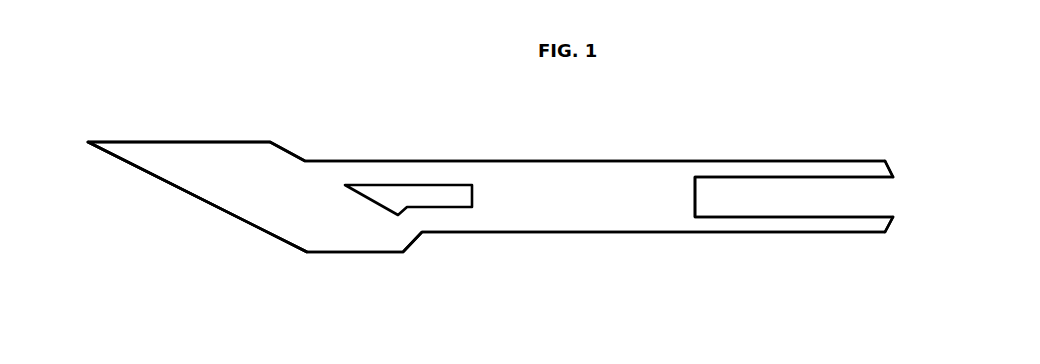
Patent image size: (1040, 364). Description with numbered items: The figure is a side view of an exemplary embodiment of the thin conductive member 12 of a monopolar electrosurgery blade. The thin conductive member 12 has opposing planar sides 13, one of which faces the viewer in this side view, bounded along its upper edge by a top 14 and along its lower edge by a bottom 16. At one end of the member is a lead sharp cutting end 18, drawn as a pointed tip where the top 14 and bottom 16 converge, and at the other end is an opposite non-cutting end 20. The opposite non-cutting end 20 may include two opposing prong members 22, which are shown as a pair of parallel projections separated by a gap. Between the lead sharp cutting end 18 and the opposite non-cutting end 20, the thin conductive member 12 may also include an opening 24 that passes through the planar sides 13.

The thin conductive member 12 is at (362, 230).
The opposing planar sides 13 is at (561, 204).
The top 14 is at (192, 142).
The bottom 16 is at (313, 253).
The lead sharp cutting end 18 is at (186, 194).
The opposite non-cutting end 20 is at (883, 157).
The opposing prong members 22 is at (892, 167).
The opening 24 is at (395, 192).